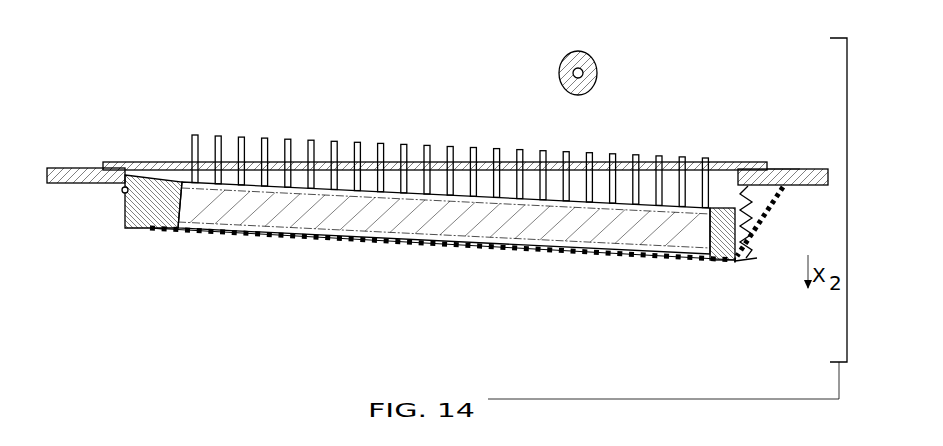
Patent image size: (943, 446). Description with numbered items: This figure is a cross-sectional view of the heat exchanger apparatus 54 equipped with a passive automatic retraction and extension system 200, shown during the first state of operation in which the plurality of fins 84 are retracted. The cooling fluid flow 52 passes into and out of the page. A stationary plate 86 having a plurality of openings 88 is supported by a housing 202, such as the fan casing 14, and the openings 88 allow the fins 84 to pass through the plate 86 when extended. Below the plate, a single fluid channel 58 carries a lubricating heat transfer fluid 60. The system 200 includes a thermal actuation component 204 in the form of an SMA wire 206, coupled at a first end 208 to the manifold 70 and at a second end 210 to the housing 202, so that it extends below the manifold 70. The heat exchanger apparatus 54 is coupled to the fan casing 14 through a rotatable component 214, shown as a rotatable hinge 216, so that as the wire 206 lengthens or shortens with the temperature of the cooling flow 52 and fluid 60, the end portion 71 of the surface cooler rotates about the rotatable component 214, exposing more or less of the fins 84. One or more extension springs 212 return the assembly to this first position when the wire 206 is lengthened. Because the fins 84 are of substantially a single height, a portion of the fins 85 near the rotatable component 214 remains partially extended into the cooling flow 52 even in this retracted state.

The fan casing 14 is at (57, 166).
The cooling fluid flow 52 is at (598, 74).
The heat exchanger apparatus 54 is at (156, 52).
The fluid channel 58 is at (342, 236).
The heat transfer fluid 60 is at (440, 226).
The manifold 70 is at (138, 218).
The end portion 71 is at (205, 265).
The fins 84 is at (706, 161).
The portion of the fins 85 is at (346, 106).
The plate 86 is at (745, 162).
The openings 88 is at (185, 134).
The passive automatic retraction and extension system 200 is at (769, 269).
The housing 202 is at (726, 263).
The thermal actuation component 204 is at (443, 271).
The SMA wire 206 is at (583, 262).
The first end 208 is at (152, 233).
The second end 210 is at (784, 192).
The extension spring 212 is at (782, 168).
The rotatable component 214 is at (107, 252).
The rotatable hinge 216 is at (122, 193).